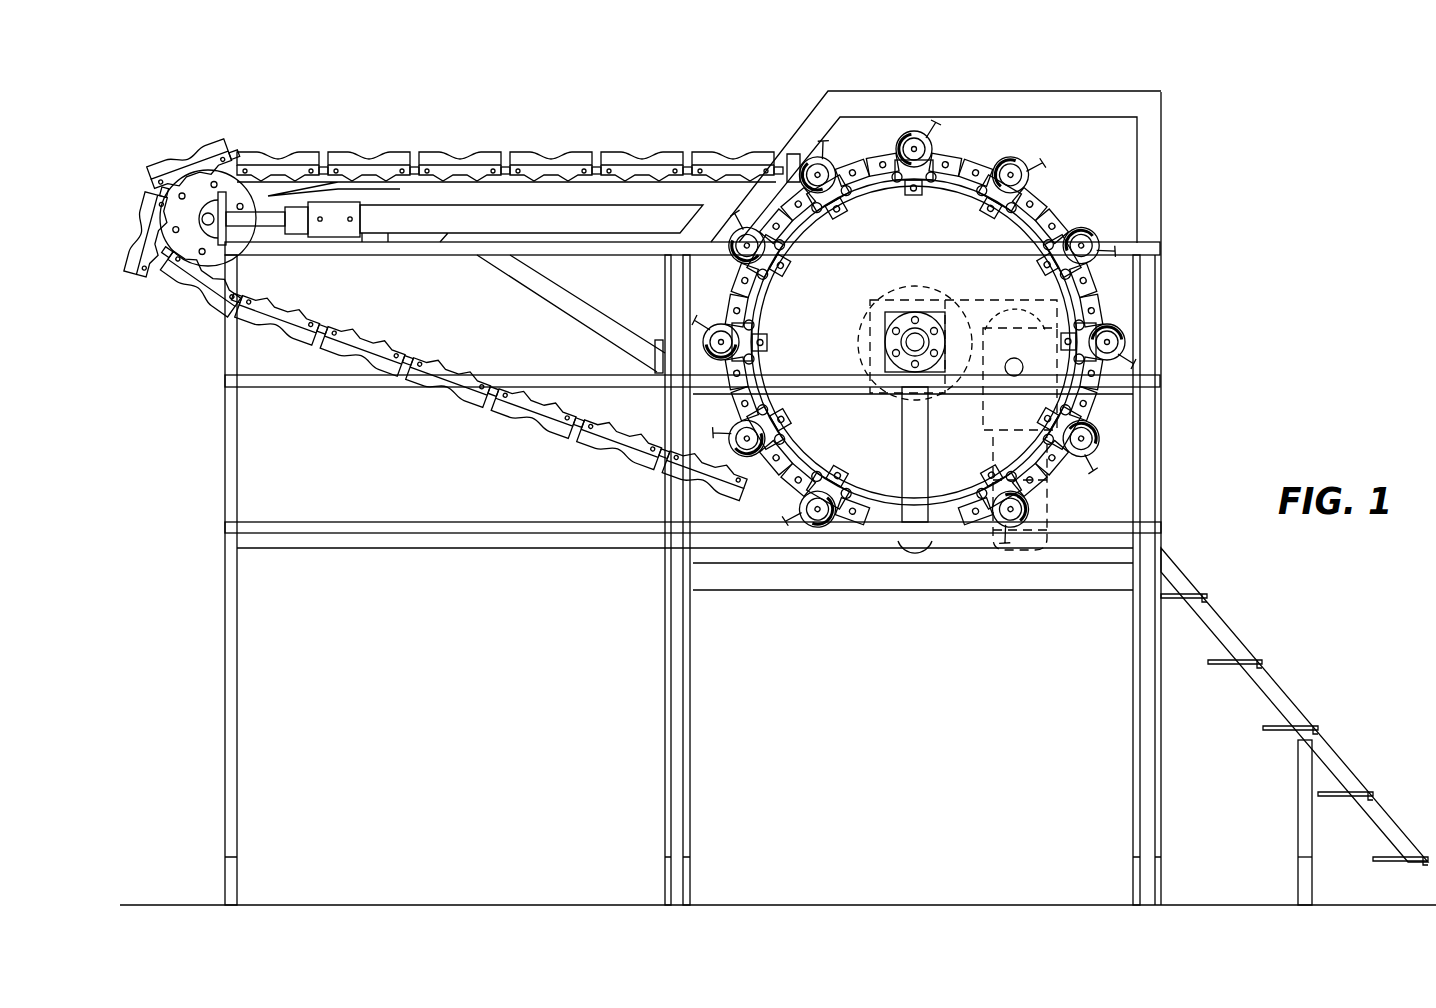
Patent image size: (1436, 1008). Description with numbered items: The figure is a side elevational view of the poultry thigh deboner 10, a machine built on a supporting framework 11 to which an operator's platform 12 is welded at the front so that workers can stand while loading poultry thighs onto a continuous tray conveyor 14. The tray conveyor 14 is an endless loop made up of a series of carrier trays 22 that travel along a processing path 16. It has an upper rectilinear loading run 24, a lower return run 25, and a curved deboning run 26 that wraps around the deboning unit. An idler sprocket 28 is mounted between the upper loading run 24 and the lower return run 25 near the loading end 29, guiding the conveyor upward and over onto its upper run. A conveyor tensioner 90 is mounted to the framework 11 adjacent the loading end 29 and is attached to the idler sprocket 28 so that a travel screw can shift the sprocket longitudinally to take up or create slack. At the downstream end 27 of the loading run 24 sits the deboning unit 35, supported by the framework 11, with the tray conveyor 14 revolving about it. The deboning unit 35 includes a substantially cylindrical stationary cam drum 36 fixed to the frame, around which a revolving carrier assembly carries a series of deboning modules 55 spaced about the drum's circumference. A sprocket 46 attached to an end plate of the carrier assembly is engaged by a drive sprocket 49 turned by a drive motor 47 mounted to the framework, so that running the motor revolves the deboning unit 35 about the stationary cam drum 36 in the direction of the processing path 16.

The poultry thigh deboner 10 is at (1236, 165).
The supporting framework 11 is at (1155, 218).
The operator's platform 12 is at (305, 524).
The tray conveyor 14 is at (393, 152).
The processing path 16 is at (550, 132).
The carrier trays 22 is at (535, 418).
The upper rectilinear loading run 24 is at (668, 152).
The lower return run 25 is at (586, 436).
The curved deboning run 26 is at (1076, 208).
The downstream end of the loading run 27 is at (846, 158).
The idler sprocket 28 is at (183, 246).
The loading end 29 is at (428, 152).
The deboning unit 35 is at (1078, 162).
The stationary cam drum 36 is at (818, 344).
The sprocket 46 is at (898, 292).
The drive motor 47 is at (1046, 500).
The drive sprocket 49 is at (1040, 300).
The deboning modules 55 is at (1042, 174).
The conveyor tensioner 90 is at (335, 225).